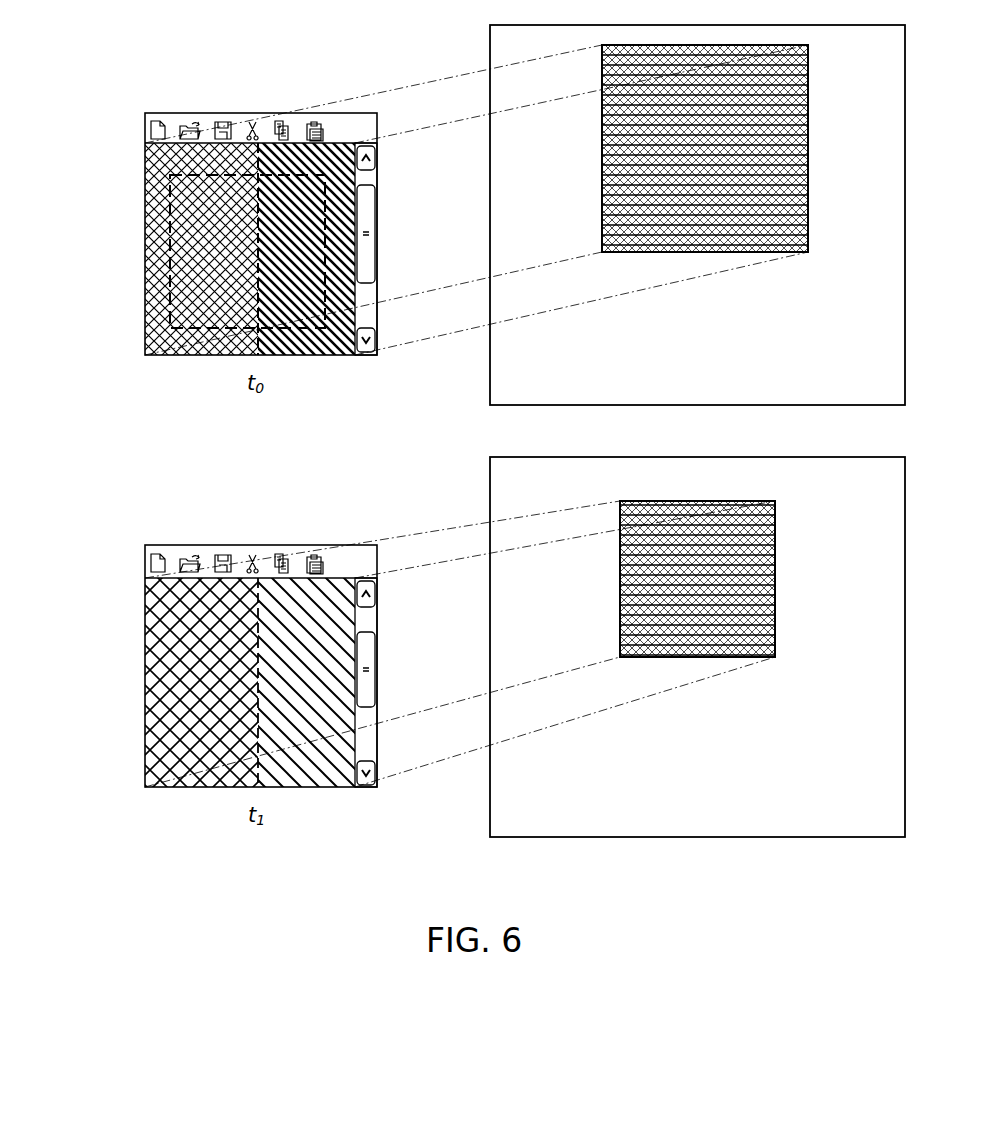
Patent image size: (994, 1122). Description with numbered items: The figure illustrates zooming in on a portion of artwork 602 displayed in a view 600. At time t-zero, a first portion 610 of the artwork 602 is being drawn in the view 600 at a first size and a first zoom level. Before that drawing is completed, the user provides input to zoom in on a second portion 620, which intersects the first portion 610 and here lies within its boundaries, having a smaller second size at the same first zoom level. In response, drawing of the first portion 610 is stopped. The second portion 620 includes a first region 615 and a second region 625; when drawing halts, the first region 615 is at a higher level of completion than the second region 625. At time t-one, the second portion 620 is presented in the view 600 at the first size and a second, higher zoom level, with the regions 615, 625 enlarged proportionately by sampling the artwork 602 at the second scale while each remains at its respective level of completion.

The view 600 is at (130, 130).
The artwork 602 is at (697, 431).
The first portion 610 is at (128, 150).
The first region 615 is at (201, 465).
The second portion 620 is at (128, 583).
The second region 625 is at (306, 465).